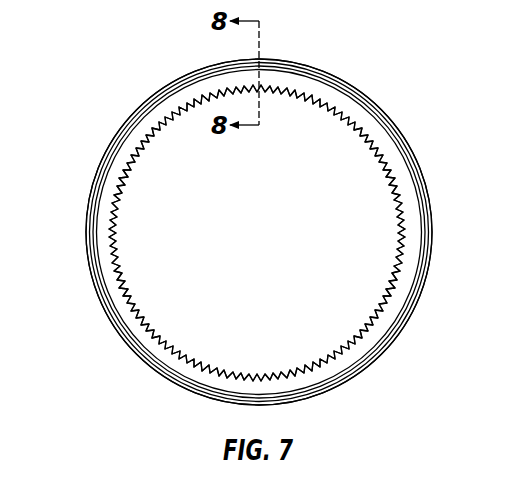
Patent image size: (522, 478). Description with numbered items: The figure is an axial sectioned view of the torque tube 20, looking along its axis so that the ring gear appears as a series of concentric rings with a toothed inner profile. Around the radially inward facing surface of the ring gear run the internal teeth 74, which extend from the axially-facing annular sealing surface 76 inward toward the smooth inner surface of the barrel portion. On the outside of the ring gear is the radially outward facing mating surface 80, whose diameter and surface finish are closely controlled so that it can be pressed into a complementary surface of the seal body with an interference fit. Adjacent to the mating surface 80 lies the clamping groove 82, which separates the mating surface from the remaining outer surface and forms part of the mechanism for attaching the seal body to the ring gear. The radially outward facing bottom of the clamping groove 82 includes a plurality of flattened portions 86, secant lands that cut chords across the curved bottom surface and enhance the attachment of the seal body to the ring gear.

The torque tube 20 is at (152, 76).
The internal teeth 74 is at (132, 152).
The axially-facing annular sealing surface 76 is at (110, 192).
The radially outward facing mating surface 80 is at (388, 118).
The clamping groove 82 is at (338, 90).
The flattened portions 86 is at (272, 66).